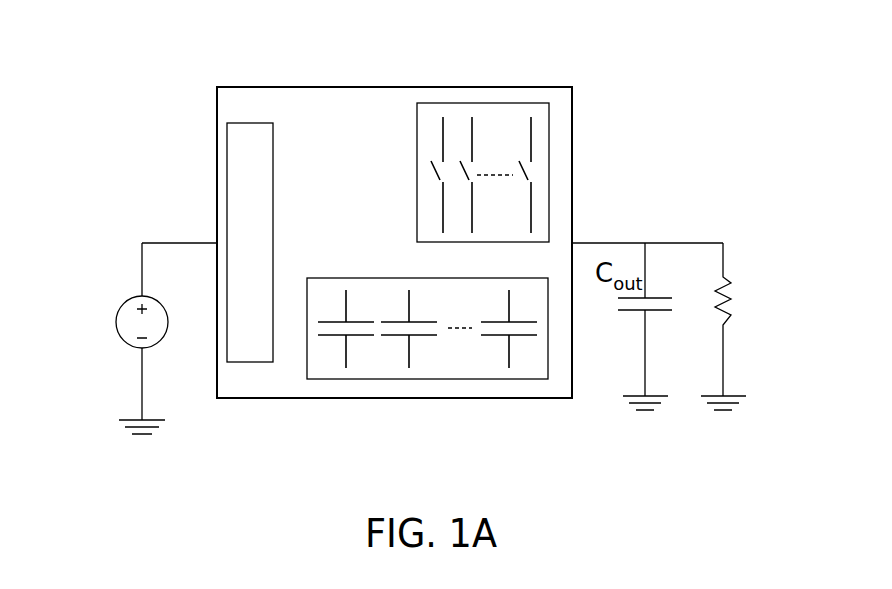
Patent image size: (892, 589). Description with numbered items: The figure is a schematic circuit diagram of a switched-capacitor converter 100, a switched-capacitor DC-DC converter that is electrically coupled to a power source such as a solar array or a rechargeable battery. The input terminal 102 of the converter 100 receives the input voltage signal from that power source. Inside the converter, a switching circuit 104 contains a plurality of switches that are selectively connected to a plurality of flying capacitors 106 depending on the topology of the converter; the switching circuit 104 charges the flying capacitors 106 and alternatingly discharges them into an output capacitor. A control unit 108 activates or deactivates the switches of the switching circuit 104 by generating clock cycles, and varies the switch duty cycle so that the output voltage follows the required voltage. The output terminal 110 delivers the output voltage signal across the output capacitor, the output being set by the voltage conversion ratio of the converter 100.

The switched-capacitor converter 100 is at (153, 45).
The input terminal 102 is at (116, 322).
The switching circuit 104 is at (549, 160).
The plurality of flying capacitors 106 is at (425, 379).
The control unit 108 is at (227, 183).
The output terminal 110 is at (733, 284).